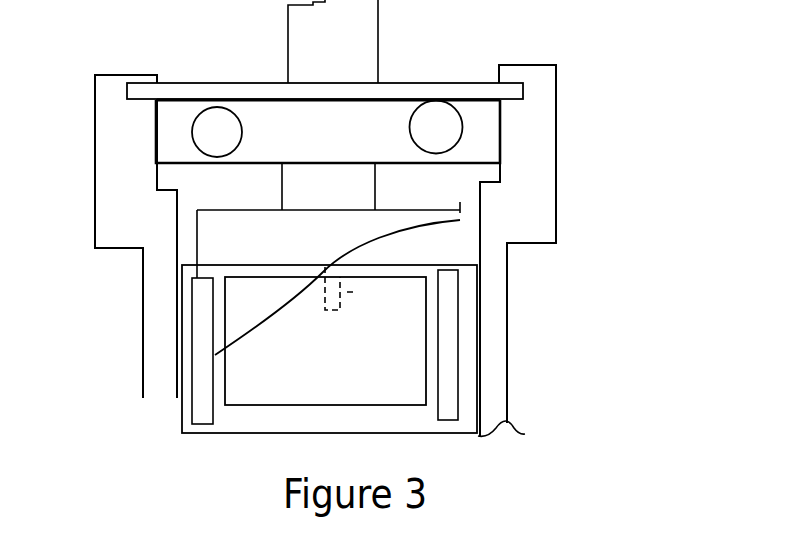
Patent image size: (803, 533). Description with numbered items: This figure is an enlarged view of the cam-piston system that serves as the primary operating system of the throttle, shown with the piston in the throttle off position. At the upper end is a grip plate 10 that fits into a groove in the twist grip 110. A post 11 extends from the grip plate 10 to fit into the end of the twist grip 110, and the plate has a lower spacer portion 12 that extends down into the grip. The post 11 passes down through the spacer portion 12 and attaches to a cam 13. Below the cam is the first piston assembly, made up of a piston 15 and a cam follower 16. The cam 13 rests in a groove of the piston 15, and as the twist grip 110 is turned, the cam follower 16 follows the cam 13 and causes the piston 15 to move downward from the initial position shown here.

The grip plate 10 is at (248, 82).
The post 11 is at (382, 40).
The lower spacer portion 12 is at (360, 132).
The cam 13 is at (395, 218).
The piston 15 is at (188, 435).
The cam follower 16 is at (343, 312).
The twist grip 110 is at (90, 212).